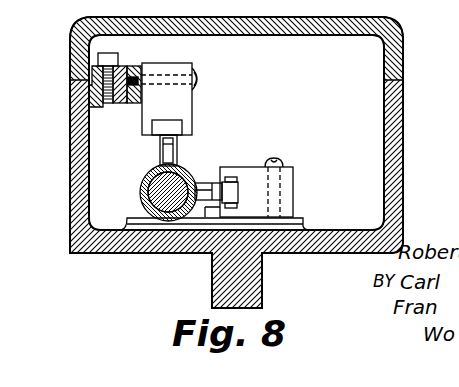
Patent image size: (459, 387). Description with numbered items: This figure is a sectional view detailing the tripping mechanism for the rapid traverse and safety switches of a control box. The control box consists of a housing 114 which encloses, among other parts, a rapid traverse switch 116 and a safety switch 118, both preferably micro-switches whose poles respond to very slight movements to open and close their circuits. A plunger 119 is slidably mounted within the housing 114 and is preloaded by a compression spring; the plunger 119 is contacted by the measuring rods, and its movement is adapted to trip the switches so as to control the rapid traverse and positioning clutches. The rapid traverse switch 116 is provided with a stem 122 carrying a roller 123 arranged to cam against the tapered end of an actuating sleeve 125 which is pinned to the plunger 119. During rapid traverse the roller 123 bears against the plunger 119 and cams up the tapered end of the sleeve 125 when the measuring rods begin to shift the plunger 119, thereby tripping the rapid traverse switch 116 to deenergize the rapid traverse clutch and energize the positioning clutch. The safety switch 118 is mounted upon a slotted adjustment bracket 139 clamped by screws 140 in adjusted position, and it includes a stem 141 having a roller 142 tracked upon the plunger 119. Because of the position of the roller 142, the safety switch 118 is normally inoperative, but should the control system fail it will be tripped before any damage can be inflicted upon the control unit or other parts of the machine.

The housing 114 is at (404, 115).
The rapid traverse switch 116 is at (258, 176).
The safety switch 118 is at (181, 99).
The plunger 119 is at (162, 203).
The stem 122 is at (222, 170).
The roller 123 is at (203, 188).
The actuating sleeve 125 is at (147, 182).
The slotted adjustment bracket 139 is at (126, 72).
The screws 140 is at (98, 58).
The stem 141 is at (158, 151).
The roller 142 is at (170, 157).